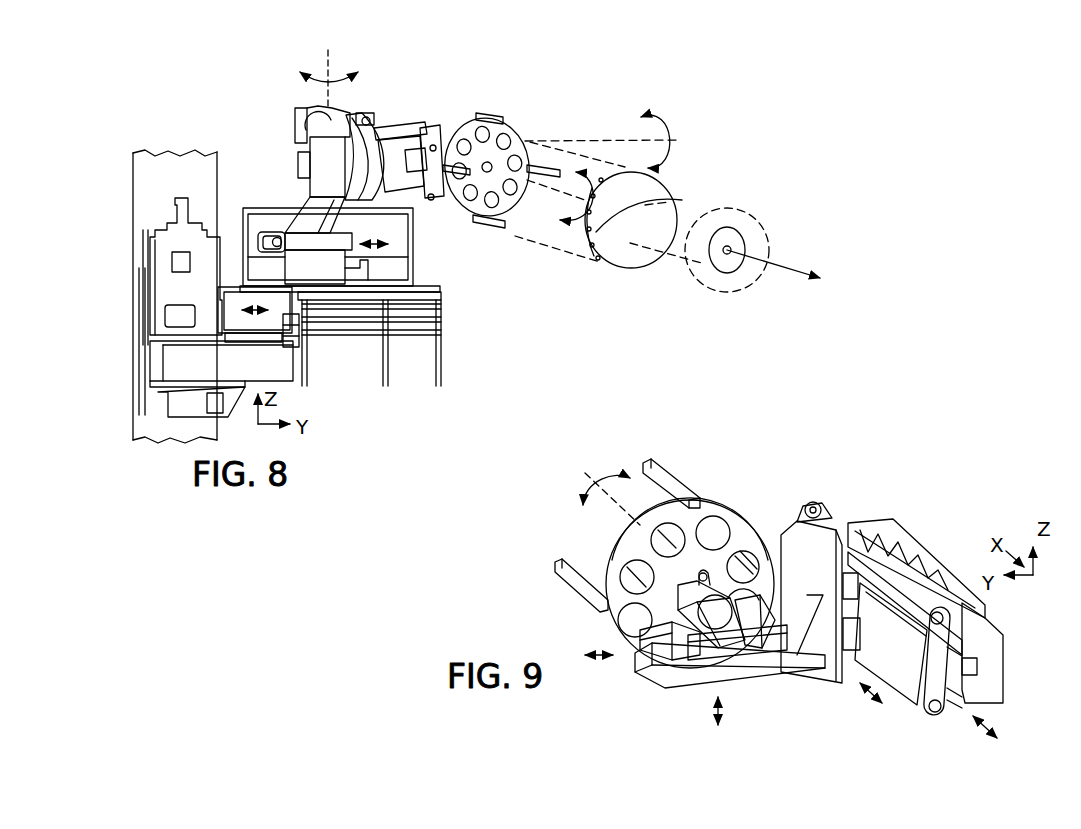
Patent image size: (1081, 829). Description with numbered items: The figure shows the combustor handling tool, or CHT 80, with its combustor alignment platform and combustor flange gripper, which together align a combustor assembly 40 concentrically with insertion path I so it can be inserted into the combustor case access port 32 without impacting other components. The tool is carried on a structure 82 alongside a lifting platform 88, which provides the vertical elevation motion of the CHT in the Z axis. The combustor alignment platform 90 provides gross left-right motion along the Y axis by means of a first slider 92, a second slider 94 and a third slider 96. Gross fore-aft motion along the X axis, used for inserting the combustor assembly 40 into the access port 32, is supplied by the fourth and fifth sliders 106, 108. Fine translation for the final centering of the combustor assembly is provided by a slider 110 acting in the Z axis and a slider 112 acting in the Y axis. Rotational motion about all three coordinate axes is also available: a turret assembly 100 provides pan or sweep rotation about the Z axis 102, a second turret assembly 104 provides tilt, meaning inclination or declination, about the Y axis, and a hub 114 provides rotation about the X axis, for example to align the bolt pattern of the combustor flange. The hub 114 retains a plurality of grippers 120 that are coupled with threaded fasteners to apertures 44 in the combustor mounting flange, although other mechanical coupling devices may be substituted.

In FIG. 8, the combustor case access port 32 is at (712, 298).
In FIG. 8, the combustor assembly 40 is at (758, 215).
In FIG. 8, the apertures 44 is at (632, 214).
In FIG. 8, the CHT 80 is at (375, 78).
In FIG. 8, the wall / frame member 82 is at (165, 160).
In FIG. 8, the lifting platform 88 is at (142, 400).
In FIG. 8, the combustor alignment platform 90 is at (328, 403).
In FIG. 8, the first slider 92 is at (195, 340).
In FIG. 8, the second slider 94 is at (407, 310).
In FIG. 8, the third slider 96 is at (295, 243).
In FIG. 8, the turret assembly 100 is at (283, 172).
In FIG. 8, the Z axis 102 is at (338, 182).
In FIG. 8, the turret assembly 104 is at (372, 162).
In FIG. 9, the fourth slider 106 is at (967, 642).
In FIG. 9, the fifth slider 108 is at (848, 542).
In FIG. 8, the slider 110 is at (458, 85).
In FIG. 9, the slider 110 is at (655, 668).
In FIG. 9, the slider 112 is at (683, 608).
In FIG. 9, the hub 114 is at (740, 525).
In FIG. 8, the grippers 120 is at (500, 122).
In FIG. 9, the grippers 120 is at (672, 481).